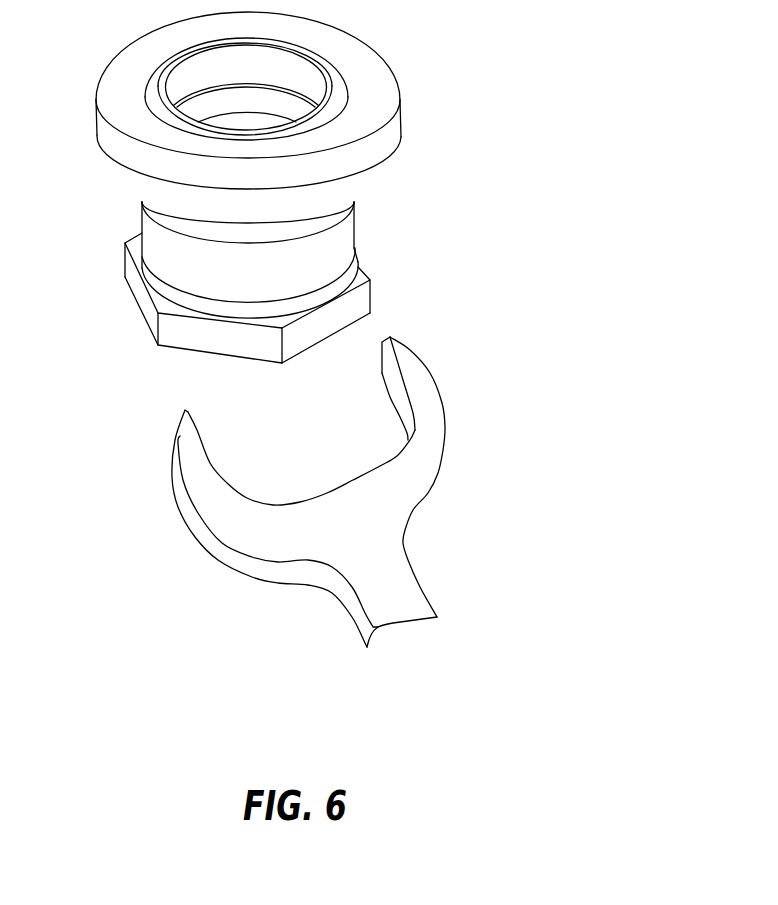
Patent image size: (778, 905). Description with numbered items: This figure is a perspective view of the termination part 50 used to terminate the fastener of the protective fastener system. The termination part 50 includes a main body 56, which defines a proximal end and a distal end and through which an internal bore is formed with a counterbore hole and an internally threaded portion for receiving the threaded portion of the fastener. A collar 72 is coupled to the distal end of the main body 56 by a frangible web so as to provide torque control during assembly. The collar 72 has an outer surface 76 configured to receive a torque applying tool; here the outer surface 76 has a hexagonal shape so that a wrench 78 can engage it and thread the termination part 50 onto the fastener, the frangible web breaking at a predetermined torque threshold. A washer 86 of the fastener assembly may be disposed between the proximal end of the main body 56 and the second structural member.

The termination part 50 is at (128, 203).
The main body 56 is at (376, 204).
The collar 72 is at (358, 269).
The outer surface 76 is at (358, 302).
The wrench 78 is at (426, 452).
The washer 86 is at (333, 88).